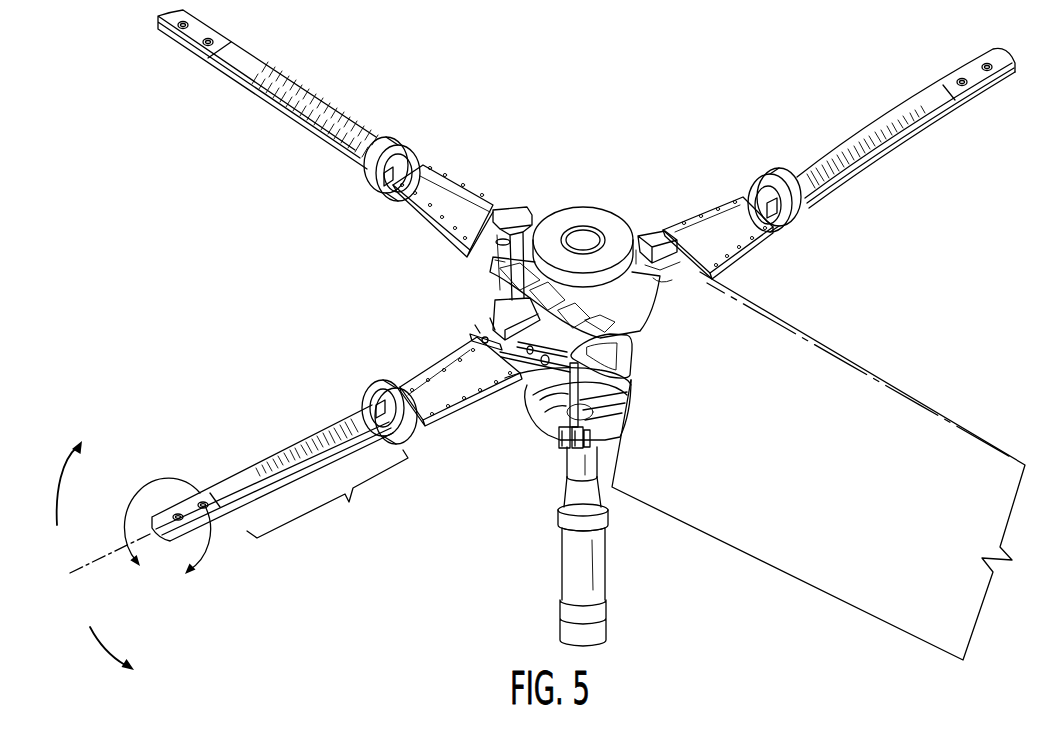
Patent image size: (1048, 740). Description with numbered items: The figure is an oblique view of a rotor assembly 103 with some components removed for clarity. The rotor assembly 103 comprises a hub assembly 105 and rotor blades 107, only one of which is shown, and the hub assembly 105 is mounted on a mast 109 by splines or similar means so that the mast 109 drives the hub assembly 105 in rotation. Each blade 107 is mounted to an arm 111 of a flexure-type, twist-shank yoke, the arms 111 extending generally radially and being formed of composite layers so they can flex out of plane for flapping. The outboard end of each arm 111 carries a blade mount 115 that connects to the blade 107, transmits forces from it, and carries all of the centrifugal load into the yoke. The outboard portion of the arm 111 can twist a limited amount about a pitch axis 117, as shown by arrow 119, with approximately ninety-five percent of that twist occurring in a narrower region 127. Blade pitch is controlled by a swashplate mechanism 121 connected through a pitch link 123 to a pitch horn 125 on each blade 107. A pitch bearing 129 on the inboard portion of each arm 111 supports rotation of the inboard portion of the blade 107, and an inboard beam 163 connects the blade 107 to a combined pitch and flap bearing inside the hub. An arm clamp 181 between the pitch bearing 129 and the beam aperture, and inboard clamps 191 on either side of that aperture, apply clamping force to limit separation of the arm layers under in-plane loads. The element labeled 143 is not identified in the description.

The rotor assembly 103 is at (632, 162).
The hub assembly 105 is at (655, 250).
The rotor blade 107 is at (777, 543).
The mast 109 is at (577, 570).
The arm 111 is at (288, 444).
The blade mount 115 is at (200, 497).
The pitch axis 117 is at (90, 563).
The arrow 119 is at (207, 552).
The swashplate mechanism 121 is at (553, 443).
The pitch link 123 is at (540, 430).
The pitch horn 125 is at (605, 346).
The region 127 is at (327, 494).
The pitch bearing 129 is at (366, 391).
The flapping direction 143 is at (60, 492).
The inboard beam 163 is at (509, 318).
The arm clamp 181 is at (430, 380).
The inboard clamp 191 is at (467, 331).